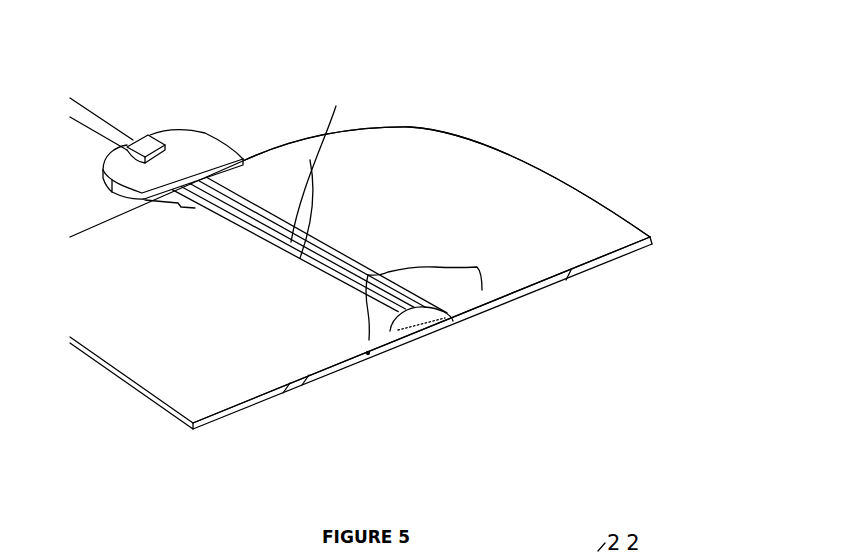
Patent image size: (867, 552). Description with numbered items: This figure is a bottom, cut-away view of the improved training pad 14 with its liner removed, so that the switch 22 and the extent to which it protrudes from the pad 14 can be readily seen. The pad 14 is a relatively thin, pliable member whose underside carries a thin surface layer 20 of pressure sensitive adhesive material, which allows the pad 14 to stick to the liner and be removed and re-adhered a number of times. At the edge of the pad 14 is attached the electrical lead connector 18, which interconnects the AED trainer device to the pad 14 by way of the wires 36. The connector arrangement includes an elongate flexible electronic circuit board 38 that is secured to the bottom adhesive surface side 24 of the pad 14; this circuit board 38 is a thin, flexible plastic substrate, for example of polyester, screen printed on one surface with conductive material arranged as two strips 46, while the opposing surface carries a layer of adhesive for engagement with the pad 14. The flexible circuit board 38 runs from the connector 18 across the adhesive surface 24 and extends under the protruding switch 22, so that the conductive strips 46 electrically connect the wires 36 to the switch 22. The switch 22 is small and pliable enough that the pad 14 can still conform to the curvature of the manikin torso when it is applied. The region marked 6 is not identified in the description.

The training pad 14 is at (549, 163).
The thin surface layer of adhesive material 20 is at (592, 223).
The bottom adhesive surface side 24 is at (455, 164).
The electrical lead connector 18 is at (192, 99).
The wires 36 is at (84, 110).
The flexible electronic circuit board 38 is at (268, 208).
The strips of conductive material 46 is at (327, 171).
The switch 22 is at (413, 345).
The encapsulation region 6 is at (483, 293).